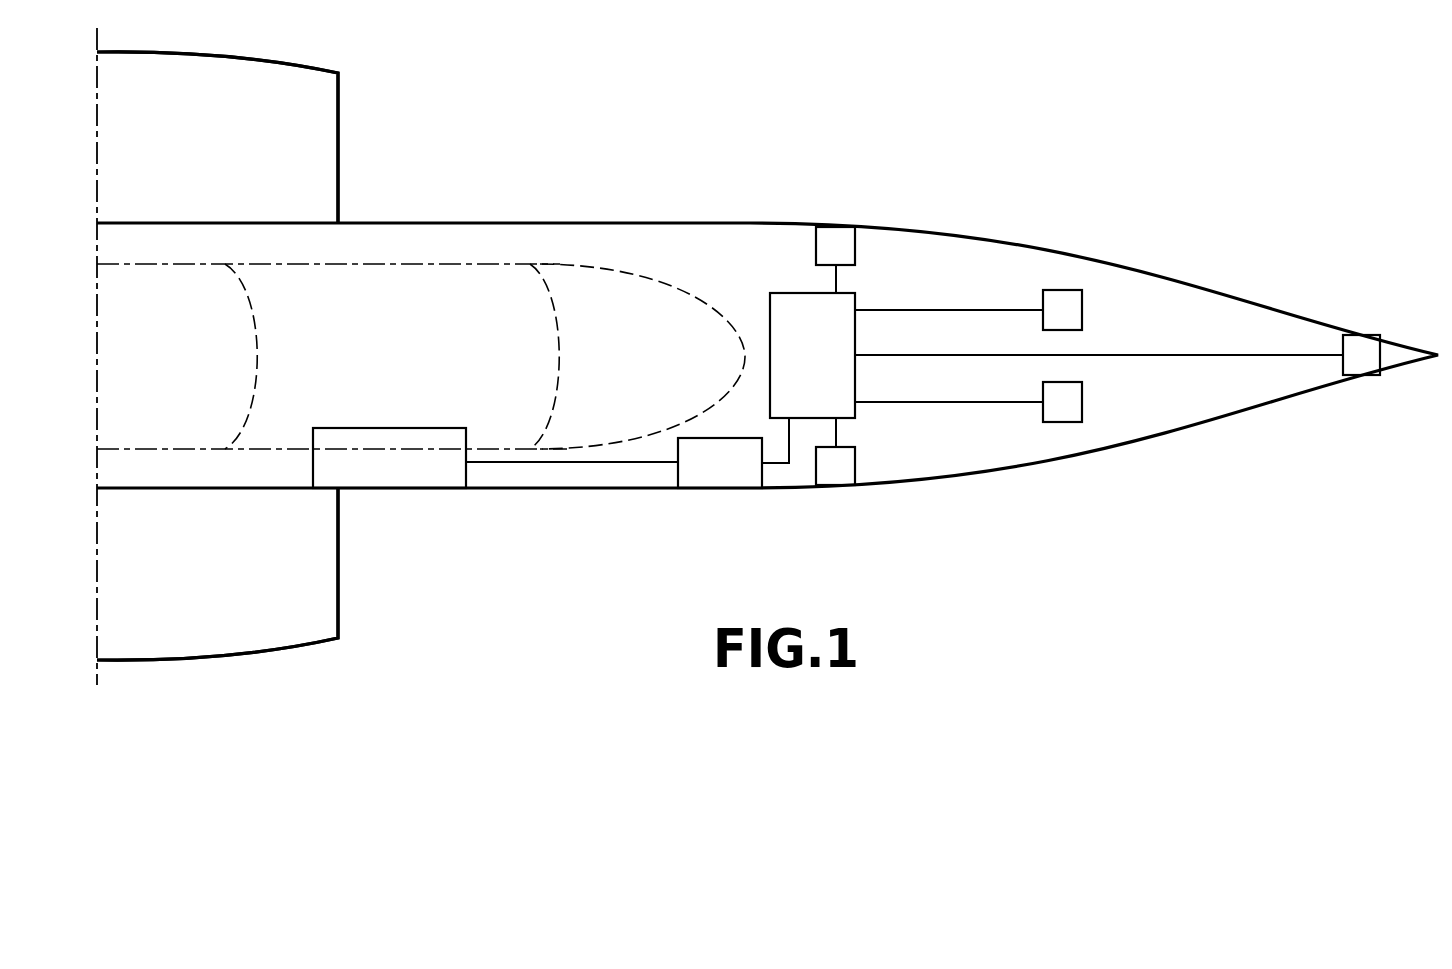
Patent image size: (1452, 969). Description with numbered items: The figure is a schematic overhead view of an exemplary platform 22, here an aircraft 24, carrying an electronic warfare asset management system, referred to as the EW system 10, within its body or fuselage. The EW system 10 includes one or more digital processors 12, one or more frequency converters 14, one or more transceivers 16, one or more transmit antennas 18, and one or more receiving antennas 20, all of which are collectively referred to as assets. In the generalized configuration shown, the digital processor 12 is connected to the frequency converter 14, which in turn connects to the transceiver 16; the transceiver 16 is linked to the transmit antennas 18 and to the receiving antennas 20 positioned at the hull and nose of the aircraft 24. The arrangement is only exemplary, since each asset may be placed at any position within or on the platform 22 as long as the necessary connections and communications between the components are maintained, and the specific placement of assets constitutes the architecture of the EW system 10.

The EW asset management system 10 is at (1044, 110).
The digital processor 12 is at (397, 468).
The frequency converter 14 is at (715, 468).
The transceiver 16 is at (828, 369).
The transmit antenna 18 is at (1068, 314).
The receiving antenna 20 is at (833, 242).
The platform 22 is at (292, 652).
The aircraft 24 is at (292, 652).